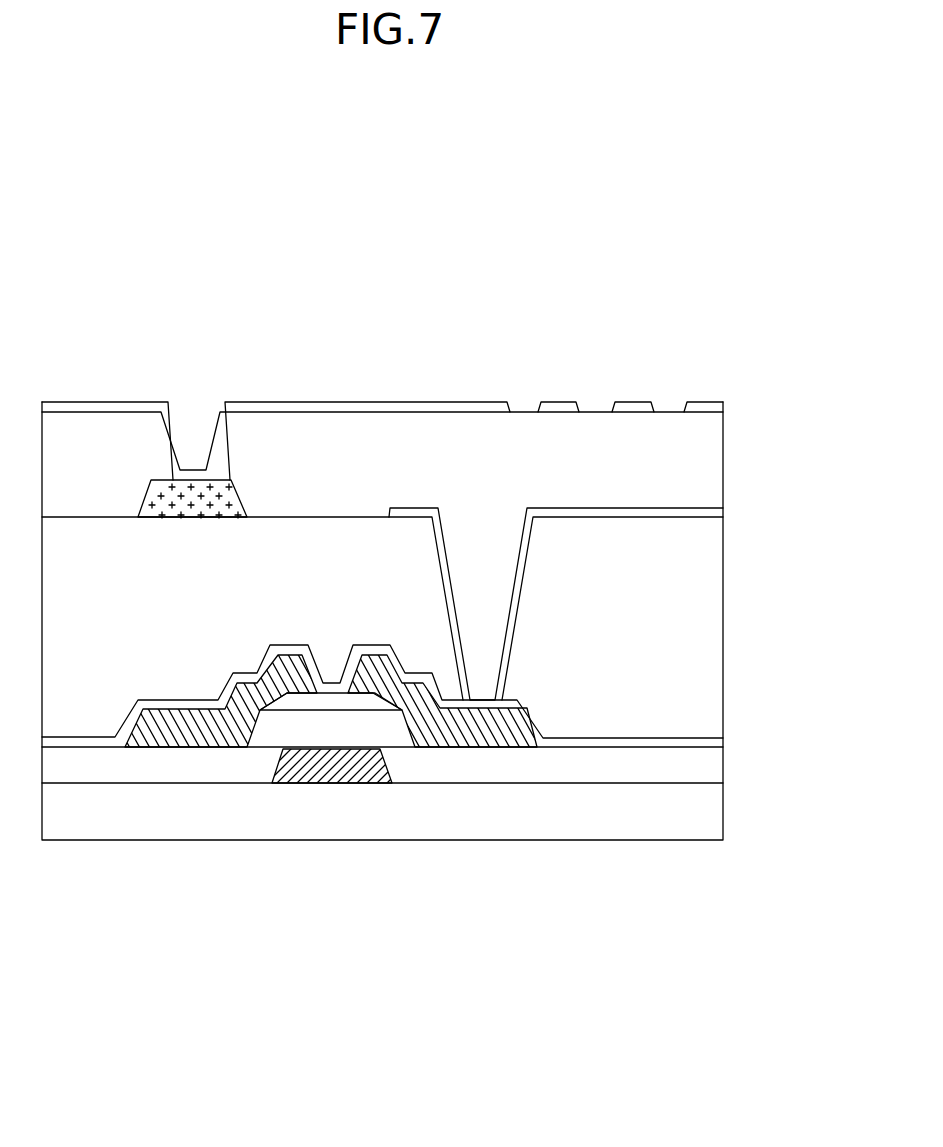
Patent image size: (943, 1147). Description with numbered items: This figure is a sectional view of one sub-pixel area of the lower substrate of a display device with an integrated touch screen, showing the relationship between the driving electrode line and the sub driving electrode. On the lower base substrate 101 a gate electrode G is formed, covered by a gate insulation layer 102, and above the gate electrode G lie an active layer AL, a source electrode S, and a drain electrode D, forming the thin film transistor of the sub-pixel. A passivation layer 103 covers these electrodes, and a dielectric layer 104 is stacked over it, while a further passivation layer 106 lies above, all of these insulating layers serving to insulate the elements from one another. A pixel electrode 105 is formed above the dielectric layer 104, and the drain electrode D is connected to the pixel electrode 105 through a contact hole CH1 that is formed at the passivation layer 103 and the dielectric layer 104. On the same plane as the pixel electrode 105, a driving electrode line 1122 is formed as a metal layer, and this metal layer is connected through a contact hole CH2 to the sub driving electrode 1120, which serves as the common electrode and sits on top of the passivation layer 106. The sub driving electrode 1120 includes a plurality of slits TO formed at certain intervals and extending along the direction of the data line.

The lower base substrate 101 is at (712, 823).
The gate insulation layer 102 is at (712, 768).
The passivation layer 103 is at (712, 745).
The dielectric layer 104 is at (712, 603).
The pixel electrode 105 is at (712, 513).
The passivation layer 106 is at (712, 461).
The sub driving electrode 1120 is at (70, 402).
The driving electrode line 1122 is at (228, 478).
The contact hole CH1 is at (482, 535).
The contact hole CH2 is at (197, 400).
The slits TO is at (523, 400).
The source electrode S is at (203, 735).
The drain electrode D is at (473, 735).
The active layer AL is at (352, 700).
The gate electrode G is at (295, 783).